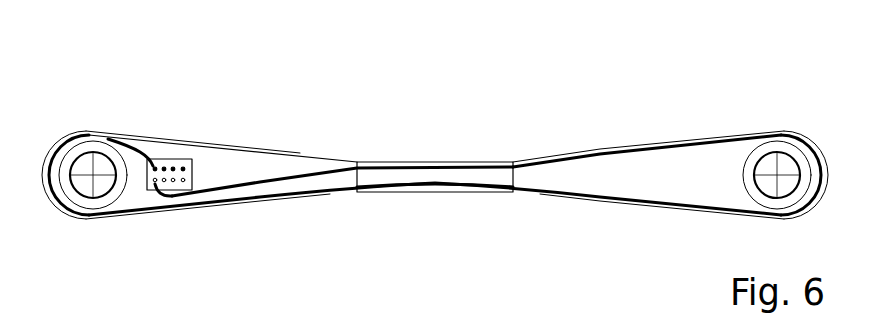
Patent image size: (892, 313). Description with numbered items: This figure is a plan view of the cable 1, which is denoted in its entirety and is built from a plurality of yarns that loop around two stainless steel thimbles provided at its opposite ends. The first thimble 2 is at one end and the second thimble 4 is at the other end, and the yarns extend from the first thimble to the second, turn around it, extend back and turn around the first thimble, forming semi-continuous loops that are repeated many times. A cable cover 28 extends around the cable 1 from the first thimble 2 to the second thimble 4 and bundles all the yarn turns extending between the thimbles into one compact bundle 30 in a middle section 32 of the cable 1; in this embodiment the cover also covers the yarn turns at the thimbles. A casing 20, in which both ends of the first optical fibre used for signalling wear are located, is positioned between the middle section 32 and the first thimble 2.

The cable 1 is at (295, 78).
The first thimble 2 is at (88, 100).
The second thimble 4 is at (737, 103).
The casing 20 is at (193, 212).
The cable cover 28 is at (395, 163).
The compact bundle 30 is at (440, 173).
The middle section 32 is at (460, 213).